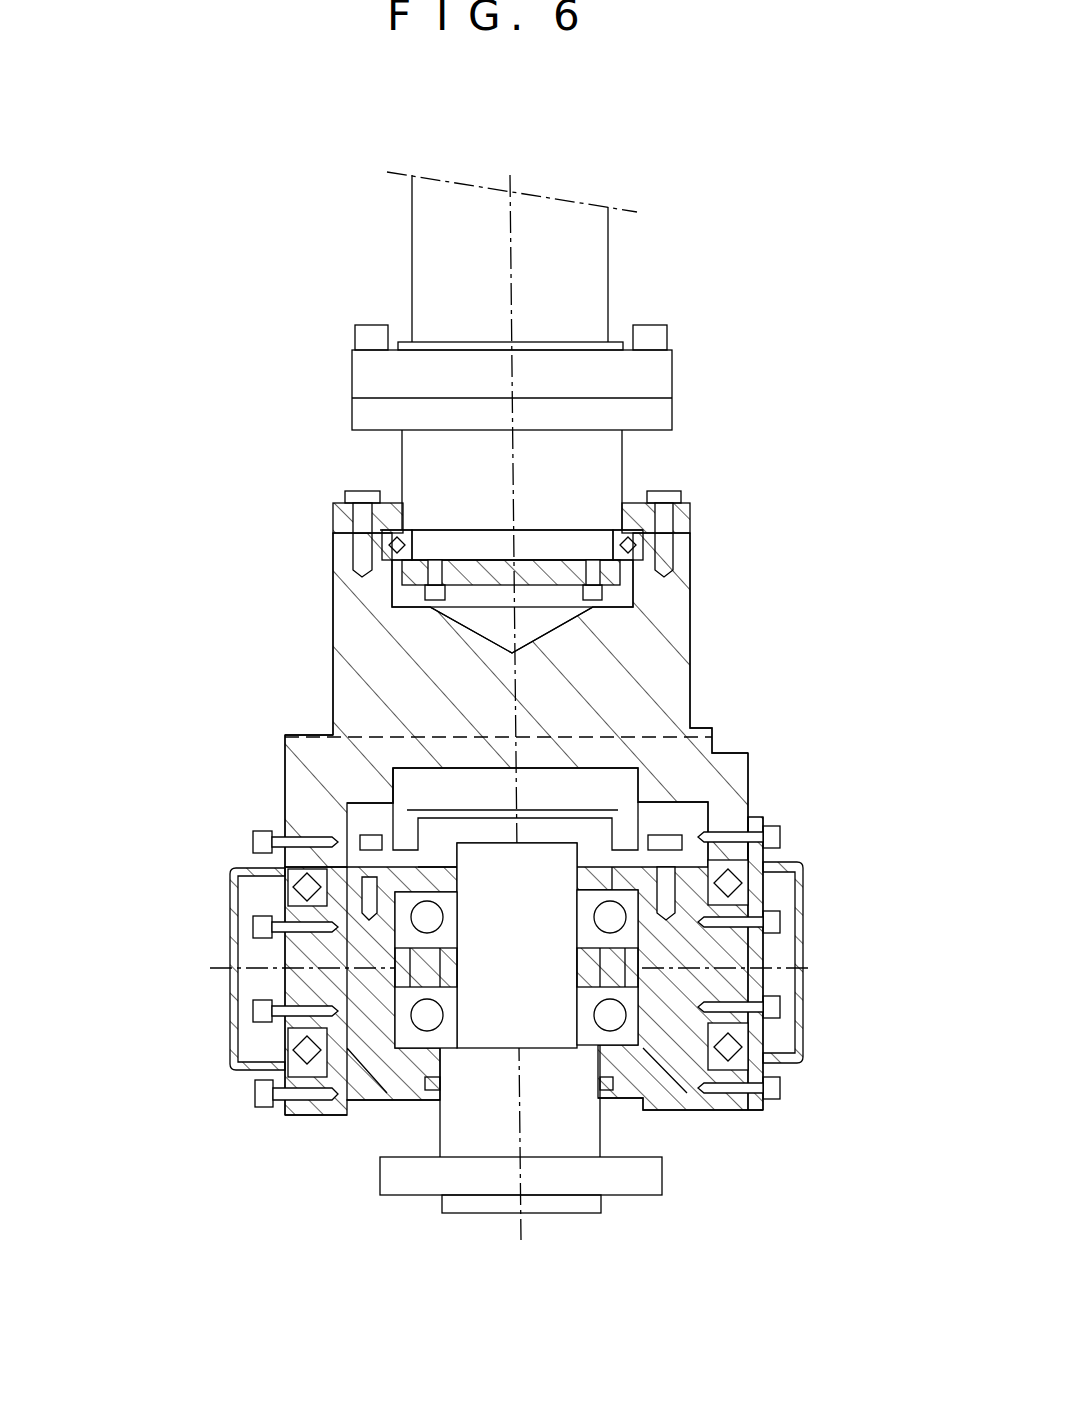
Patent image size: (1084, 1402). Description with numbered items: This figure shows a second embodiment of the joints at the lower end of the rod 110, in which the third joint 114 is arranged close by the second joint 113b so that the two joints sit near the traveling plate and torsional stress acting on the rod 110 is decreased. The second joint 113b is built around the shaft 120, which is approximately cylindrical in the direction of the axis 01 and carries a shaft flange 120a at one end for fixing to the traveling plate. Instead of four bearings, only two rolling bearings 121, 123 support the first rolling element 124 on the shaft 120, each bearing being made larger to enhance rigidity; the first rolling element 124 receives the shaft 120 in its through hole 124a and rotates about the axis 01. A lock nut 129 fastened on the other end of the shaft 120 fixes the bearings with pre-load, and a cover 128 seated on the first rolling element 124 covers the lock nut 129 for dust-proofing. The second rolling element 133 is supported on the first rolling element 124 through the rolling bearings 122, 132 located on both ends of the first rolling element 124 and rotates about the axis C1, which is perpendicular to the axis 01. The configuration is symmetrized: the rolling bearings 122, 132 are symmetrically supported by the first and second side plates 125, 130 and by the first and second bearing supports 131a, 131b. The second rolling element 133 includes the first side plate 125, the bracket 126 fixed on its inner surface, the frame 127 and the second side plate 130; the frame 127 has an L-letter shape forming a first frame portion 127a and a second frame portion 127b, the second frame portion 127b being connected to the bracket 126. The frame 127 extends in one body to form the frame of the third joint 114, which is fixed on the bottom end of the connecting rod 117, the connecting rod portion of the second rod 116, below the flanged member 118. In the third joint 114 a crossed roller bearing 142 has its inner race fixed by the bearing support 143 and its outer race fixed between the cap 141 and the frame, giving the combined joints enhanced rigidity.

The axis O1 01 is at (522, 1230).
The axis C1 is at (222, 970).
The rod 110 is at (659, 272).
The second joint 113b is at (843, 875).
The third joint 114 is at (722, 535).
The second rod 116 is at (578, 258).
The connecting rod 117 is at (608, 465).
The flange 118 is at (655, 368).
The shaft 120 is at (568, 1125).
The shaft flange 120a is at (423, 1195).
The rolling bearing 121 is at (663, 1110).
The rolling bearing 122 is at (740, 1063).
The rolling bearing 123 is at (632, 937).
The first rolling element 124 is at (727, 983).
The through hole 124a is at (395, 1047).
The first side plate 125 is at (792, 863).
The bracket 126 is at (737, 752).
The frame 127 is at (345, 618).
The first frame portion 127a is at (305, 1114).
The second frame portion 127b is at (338, 757).
The cover 128 is at (415, 835).
The lock nut 129 is at (286, 871).
The second side plate 130 is at (226, 929).
The first bearing support 131a is at (757, 953).
The second bearing support 131b is at (292, 972).
The rolling bearing 132 is at (275, 1062).
The second rolling element 133 is at (664, 705).
The cap 141 is at (688, 516).
The rolling bearing 142 is at (390, 546).
The bearing support 143 is at (617, 575).